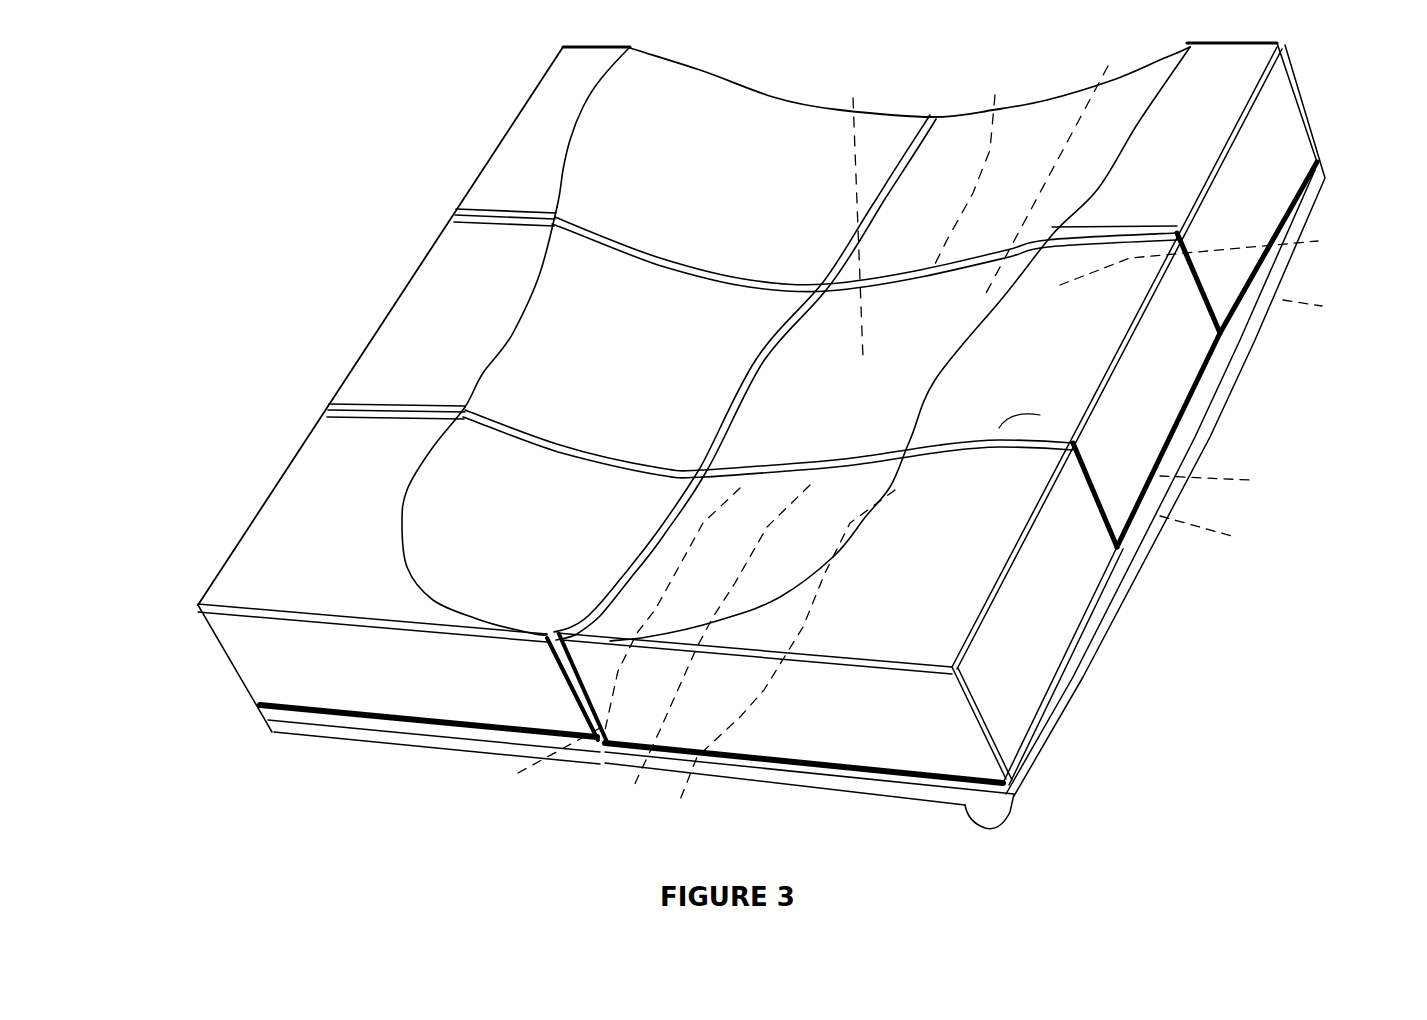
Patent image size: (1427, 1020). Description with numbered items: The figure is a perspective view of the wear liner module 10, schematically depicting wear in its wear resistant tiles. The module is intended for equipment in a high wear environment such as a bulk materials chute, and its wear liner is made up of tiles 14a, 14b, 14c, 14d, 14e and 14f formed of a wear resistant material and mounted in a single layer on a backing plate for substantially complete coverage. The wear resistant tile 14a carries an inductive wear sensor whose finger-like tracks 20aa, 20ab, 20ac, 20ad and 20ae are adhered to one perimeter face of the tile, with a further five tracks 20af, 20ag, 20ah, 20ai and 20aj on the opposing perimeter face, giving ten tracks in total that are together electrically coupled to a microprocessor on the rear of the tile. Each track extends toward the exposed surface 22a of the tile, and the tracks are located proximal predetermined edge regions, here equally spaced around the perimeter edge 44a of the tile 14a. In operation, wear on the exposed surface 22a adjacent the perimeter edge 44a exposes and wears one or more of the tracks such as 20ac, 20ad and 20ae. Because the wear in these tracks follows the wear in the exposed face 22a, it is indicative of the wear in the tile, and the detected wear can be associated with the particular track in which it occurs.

The wear liner module 10 is at (250, 236).
The wear resistant tile 14a is at (1132, 381).
The wear resistant tile 14b is at (1030, 624).
The wear resistant tile 14c is at (268, 558).
The wear resistant tile 14d is at (432, 322).
The wear resistant tile 14e is at (522, 140).
The wear resistant tile 14f is at (1258, 124).
The track 20aa is at (1183, 500).
The track 20ab is at (892, 455).
The track 20ac is at (767, 674).
The track 20ad is at (683, 655).
The track 20ae is at (591, 641).
The track 20af is at (1280, 283).
The track 20ag is at (975, 254).
The track 20ah is at (1068, 157).
The track 20ai is at (978, 159).
The track 20aj is at (856, 209).
The exposed surface 22a is at (900, 390).
The perimeter edge 44a is at (999, 428).